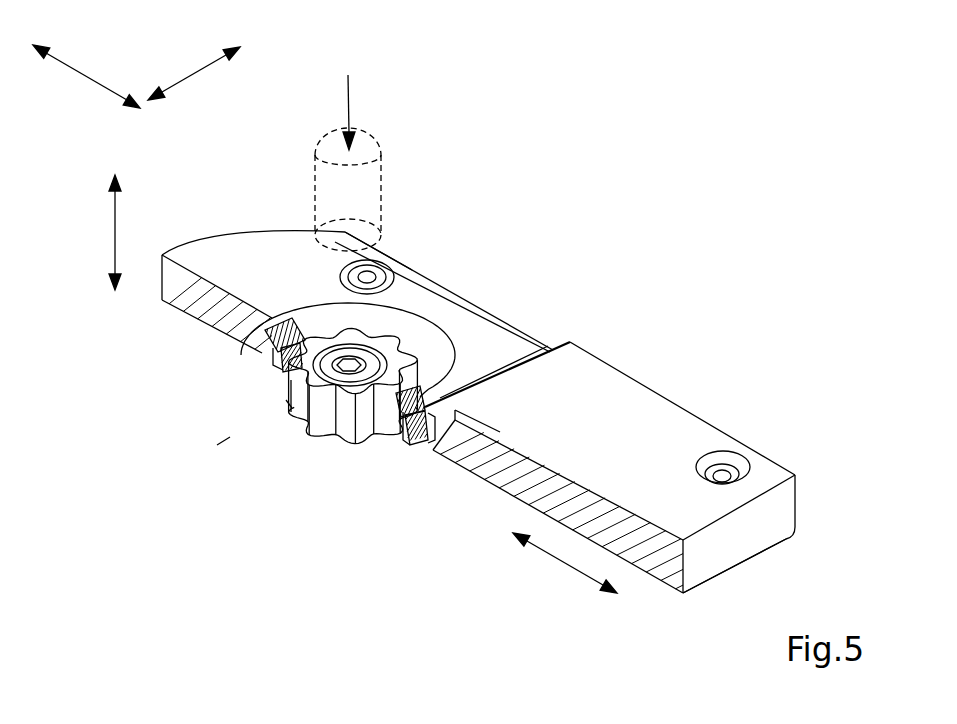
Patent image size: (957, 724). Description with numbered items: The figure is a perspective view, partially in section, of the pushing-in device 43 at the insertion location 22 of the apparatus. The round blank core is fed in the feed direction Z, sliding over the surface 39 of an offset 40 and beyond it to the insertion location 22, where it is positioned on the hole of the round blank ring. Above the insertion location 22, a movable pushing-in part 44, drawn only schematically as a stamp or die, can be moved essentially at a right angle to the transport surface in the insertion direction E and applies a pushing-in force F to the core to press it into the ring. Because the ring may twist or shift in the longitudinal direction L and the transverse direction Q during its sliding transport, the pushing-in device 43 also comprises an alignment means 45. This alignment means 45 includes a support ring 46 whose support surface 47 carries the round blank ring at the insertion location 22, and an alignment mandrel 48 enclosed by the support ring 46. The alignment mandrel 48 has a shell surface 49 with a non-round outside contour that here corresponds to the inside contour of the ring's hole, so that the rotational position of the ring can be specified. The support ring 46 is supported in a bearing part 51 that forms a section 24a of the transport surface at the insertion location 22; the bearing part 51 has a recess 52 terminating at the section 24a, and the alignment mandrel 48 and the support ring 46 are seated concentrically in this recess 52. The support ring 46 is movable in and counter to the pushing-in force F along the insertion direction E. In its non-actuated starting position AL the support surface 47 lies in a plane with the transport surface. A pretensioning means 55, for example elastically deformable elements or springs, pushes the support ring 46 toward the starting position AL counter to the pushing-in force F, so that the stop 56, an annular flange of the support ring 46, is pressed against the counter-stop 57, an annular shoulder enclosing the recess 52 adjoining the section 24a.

The section of the transport surface 24a is at (253, 247).
The insertion location 22 is at (453, 290).
The starting position AL is at (412, 257).
The pushing-in part 44 is at (382, 197).
The support surface 47 is at (437, 363).
The surface of the offset 39 is at (613, 397).
The bearing part 51 is at (700, 420).
The offset 40 is at (748, 542).
The alignment means 45 is at (340, 457).
The alignment mandrel 48 is at (295, 410).
The shell surface 49 is at (283, 408).
The pushing-in device 43 is at (217, 445).
The counter-stop 57 is at (267, 330).
The support ring 46 is at (268, 342).
The recess 52 is at (270, 356).
The pretensioning means 55 is at (410, 445).
The stop 56 is at (428, 445).
The longitudinal direction L is at (78, 71).
The transverse direction Q is at (192, 74).
The insertion direction E is at (113, 227).
The pushing-in force F is at (348, 110).
The feed direction Z is at (557, 560).